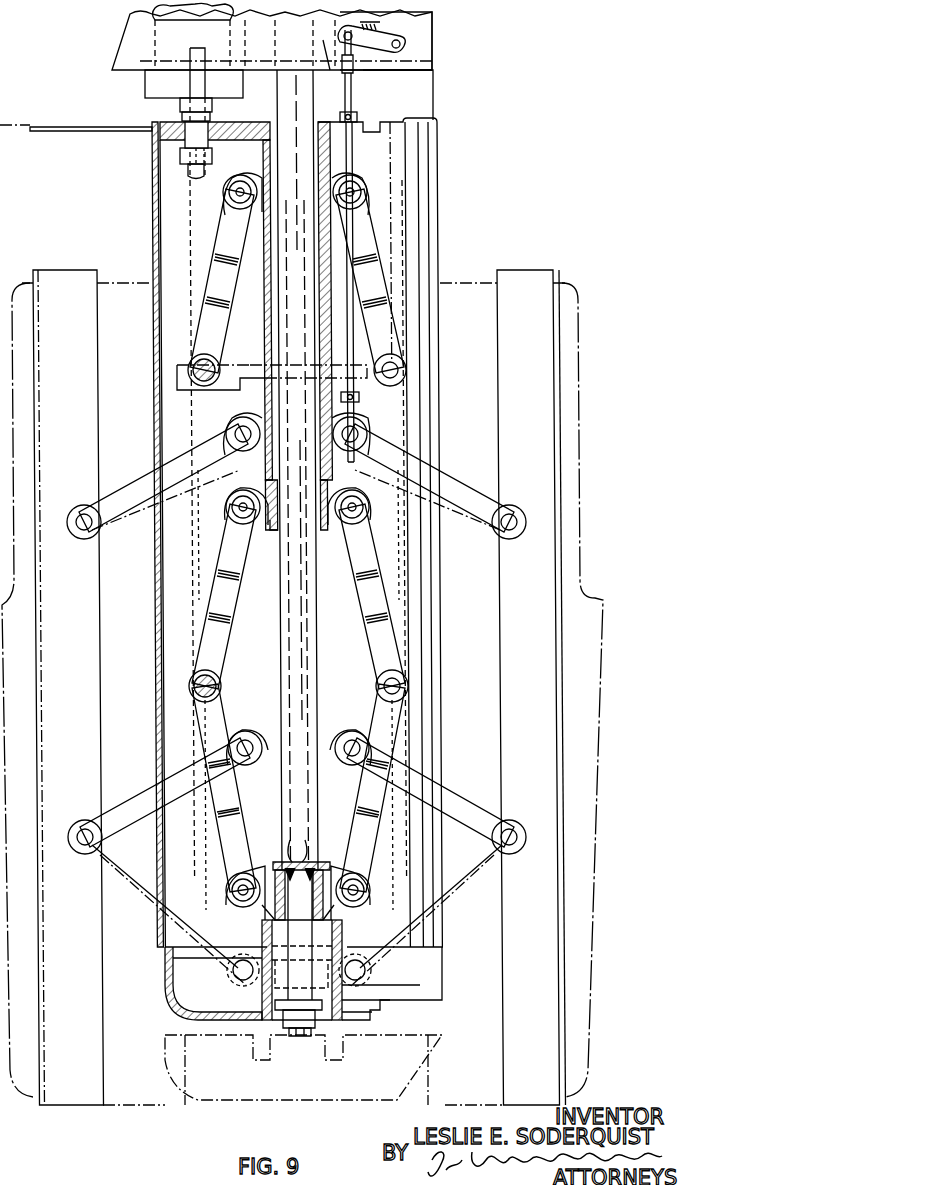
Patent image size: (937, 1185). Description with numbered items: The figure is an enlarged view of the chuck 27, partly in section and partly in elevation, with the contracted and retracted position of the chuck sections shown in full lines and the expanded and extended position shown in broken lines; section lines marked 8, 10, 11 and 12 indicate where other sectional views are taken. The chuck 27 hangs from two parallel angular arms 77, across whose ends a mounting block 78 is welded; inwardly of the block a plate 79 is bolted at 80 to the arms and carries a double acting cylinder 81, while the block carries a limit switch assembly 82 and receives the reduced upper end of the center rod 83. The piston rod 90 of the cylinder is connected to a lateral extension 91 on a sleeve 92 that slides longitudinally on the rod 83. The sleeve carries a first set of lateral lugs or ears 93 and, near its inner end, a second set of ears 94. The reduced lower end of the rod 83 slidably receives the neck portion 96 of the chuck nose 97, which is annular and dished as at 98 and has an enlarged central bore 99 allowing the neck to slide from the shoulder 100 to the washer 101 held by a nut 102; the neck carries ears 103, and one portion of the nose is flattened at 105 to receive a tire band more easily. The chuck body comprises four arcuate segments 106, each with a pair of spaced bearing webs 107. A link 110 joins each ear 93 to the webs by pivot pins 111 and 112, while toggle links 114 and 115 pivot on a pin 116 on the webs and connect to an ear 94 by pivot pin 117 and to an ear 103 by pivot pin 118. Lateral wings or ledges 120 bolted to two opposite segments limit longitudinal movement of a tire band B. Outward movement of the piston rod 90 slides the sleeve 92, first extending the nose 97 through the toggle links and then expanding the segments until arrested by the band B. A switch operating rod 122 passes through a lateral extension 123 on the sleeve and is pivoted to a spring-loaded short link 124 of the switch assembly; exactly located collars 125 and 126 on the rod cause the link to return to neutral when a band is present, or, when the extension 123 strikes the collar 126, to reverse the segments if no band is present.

The chuck 27 is at (508, 268).
The angular arms 77 is at (122, 40).
The mounting block 78 is at (325, 58).
The plate 79 is at (145, 82).
The bolt 80 is at (190, 55).
The double acting cylinder 81 is at (155, 12).
The limit switch assembly 82 is at (432, 15).
The center rod 83 is at (277, 104).
The piston rod 90 is at (182, 116).
The lateral extension 91 is at (175, 140).
The sleeve 92 is at (271, 298).
The lateral lugs or ears 93 is at (255, 178).
The lugs or ears 94 is at (252, 497).
The neck portion 96 is at (320, 862).
The chuck tip or nose 97 is at (439, 1035).
The dished portion 98 is at (195, 1004).
The enlarged central bore 99 is at (342, 940).
The shoulder 100 is at (301, 848).
The washer 101 is at (292, 1028).
The nut 102 is at (303, 1036).
The lugs or ears 103 is at (272, 908).
The flattened portion 105 is at (405, 985).
The arcuate panels or segments 106 is at (152, 235).
The bearing webs 107 is at (195, 605).
The link 110 is at (372, 255).
The pivot pin 111 is at (236, 192).
The pivot pin 112 is at (196, 372).
The toggle link 114 is at (370, 540).
The toggle link 115 is at (365, 790).
The pin 116 is at (195, 685).
The pivot pin 117 is at (238, 510).
The pivot pin 118 is at (235, 886).
The lateral wings or ledges 120 is at (68, 131).
The switch operating rod 122 is at (353, 80).
The lateral extension 123 is at (360, 124).
The short link 124 is at (404, 46).
The collar 125 is at (357, 113).
The collar 126 is at (341, 397).
The tire band B is at (581, 470).
The section line 8- 8 is at (390, 300).
The section line 10- 10 is at (388, 120).
The section line 11- 11 is at (337, 193).
The section line 12- 12 is at (392, 686).